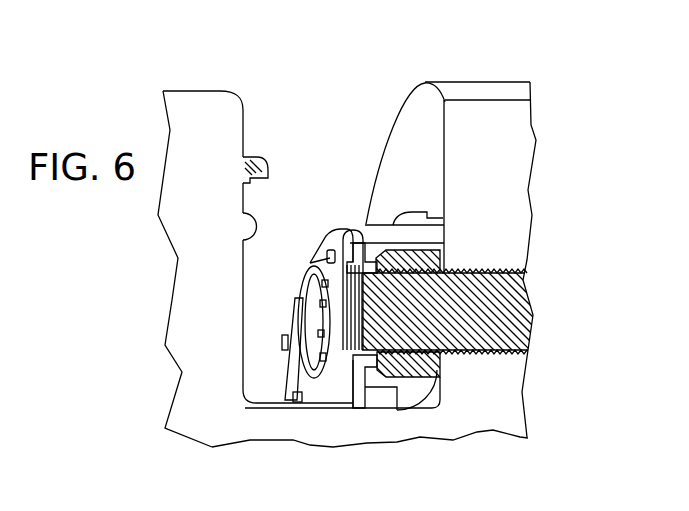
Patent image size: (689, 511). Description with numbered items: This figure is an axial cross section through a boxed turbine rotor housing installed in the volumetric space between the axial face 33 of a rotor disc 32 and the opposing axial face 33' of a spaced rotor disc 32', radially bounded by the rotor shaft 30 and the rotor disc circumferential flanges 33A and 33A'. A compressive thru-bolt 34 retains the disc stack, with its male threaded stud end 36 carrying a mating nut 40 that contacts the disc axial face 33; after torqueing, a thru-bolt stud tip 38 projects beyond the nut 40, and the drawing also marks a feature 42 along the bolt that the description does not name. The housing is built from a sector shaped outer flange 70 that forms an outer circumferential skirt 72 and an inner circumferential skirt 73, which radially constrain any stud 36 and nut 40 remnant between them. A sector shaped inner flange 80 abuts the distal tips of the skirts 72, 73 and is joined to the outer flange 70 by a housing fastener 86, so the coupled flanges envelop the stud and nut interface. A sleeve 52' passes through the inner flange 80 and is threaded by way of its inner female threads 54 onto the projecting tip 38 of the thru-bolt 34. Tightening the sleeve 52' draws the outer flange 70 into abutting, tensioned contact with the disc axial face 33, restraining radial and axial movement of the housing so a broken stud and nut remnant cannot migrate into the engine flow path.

The rotor shaft 30 is at (267, 410).
The rotor disc 32 is at (513, 259).
The opposing spaced rotor disc 32' is at (235, 269).
The rotor disc axial face 33 is at (407, 121).
The axial face of opposing rotor disc 33' is at (186, 229).
The rotor disc circumferential flange 33A is at (397, 151).
The rotor disc circumferential flange 33A' is at (271, 122).
The thru-bolt 34 is at (527, 283).
The male threaded stud end 36 is at (473, 317).
The thru-bolt stud tip 38 is at (340, 387).
The nut 40 is at (372, 224).
The threads 42 is at (444, 263).
The sleeve 52' is at (313, 294).
The female inner circumferential threads 54 is at (352, 318).
The outer flange 70 is at (413, 388).
The outer circumferential skirt 72 is at (397, 240).
The inner circumferential skirt 73 is at (372, 395).
The inner flange 80 is at (340, 372).
The housing fastener 86 is at (318, 262).